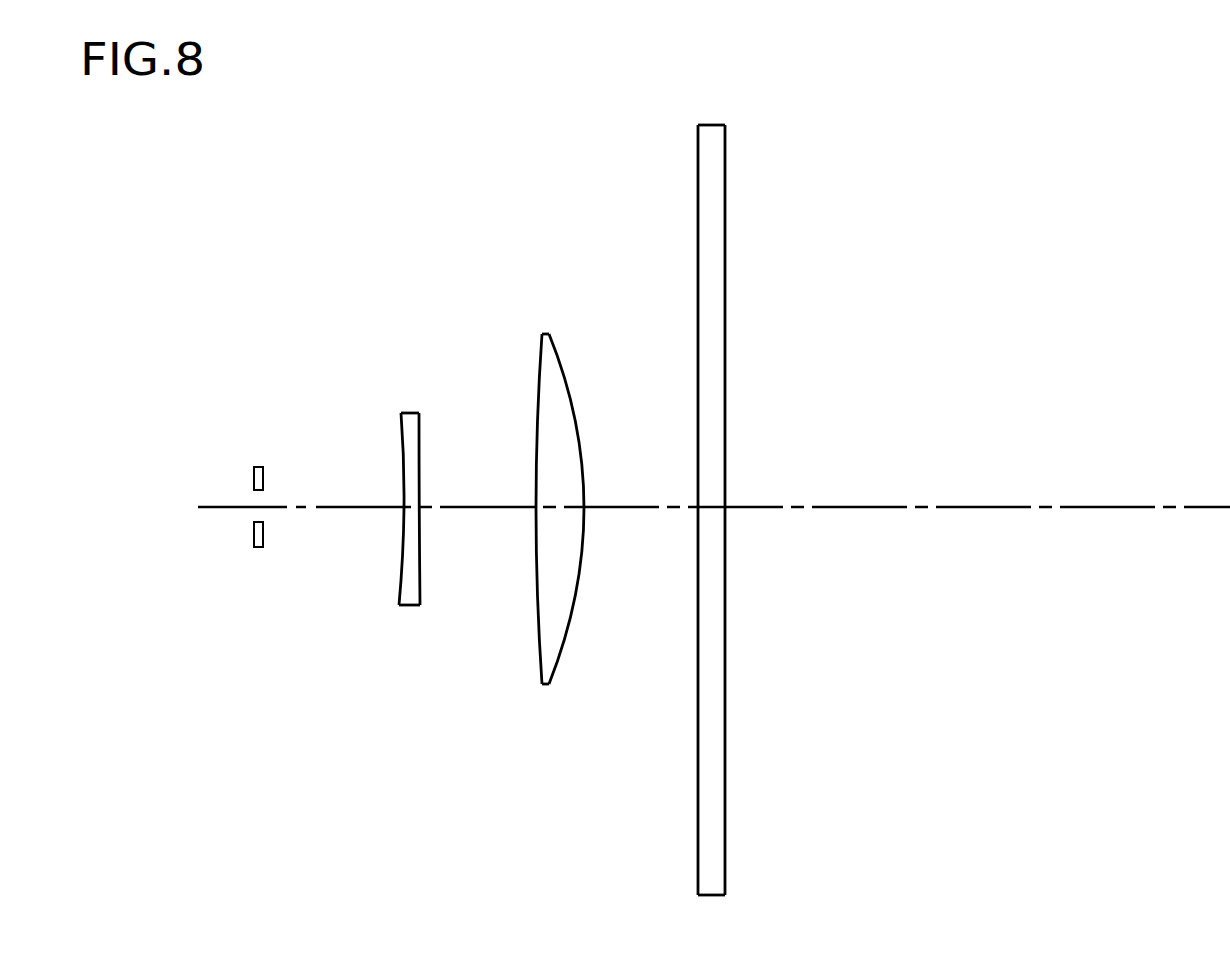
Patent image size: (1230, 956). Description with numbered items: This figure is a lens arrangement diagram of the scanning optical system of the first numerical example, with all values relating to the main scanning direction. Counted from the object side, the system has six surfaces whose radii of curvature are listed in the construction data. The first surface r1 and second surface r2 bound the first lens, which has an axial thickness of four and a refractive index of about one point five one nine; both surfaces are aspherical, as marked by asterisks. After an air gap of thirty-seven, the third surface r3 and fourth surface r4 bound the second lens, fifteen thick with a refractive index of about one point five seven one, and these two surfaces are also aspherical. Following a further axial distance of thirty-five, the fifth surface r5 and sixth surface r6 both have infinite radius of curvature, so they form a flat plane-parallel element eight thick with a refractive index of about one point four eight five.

The first surface r1 is at (358, 471).
The second surface r2 is at (473, 483).
The third surface r3 is at (521, 462).
The fourth surface r4 is at (611, 481).
The fifth surface r5 is at (698, 152).
The sixth surface r6 is at (725, 187).